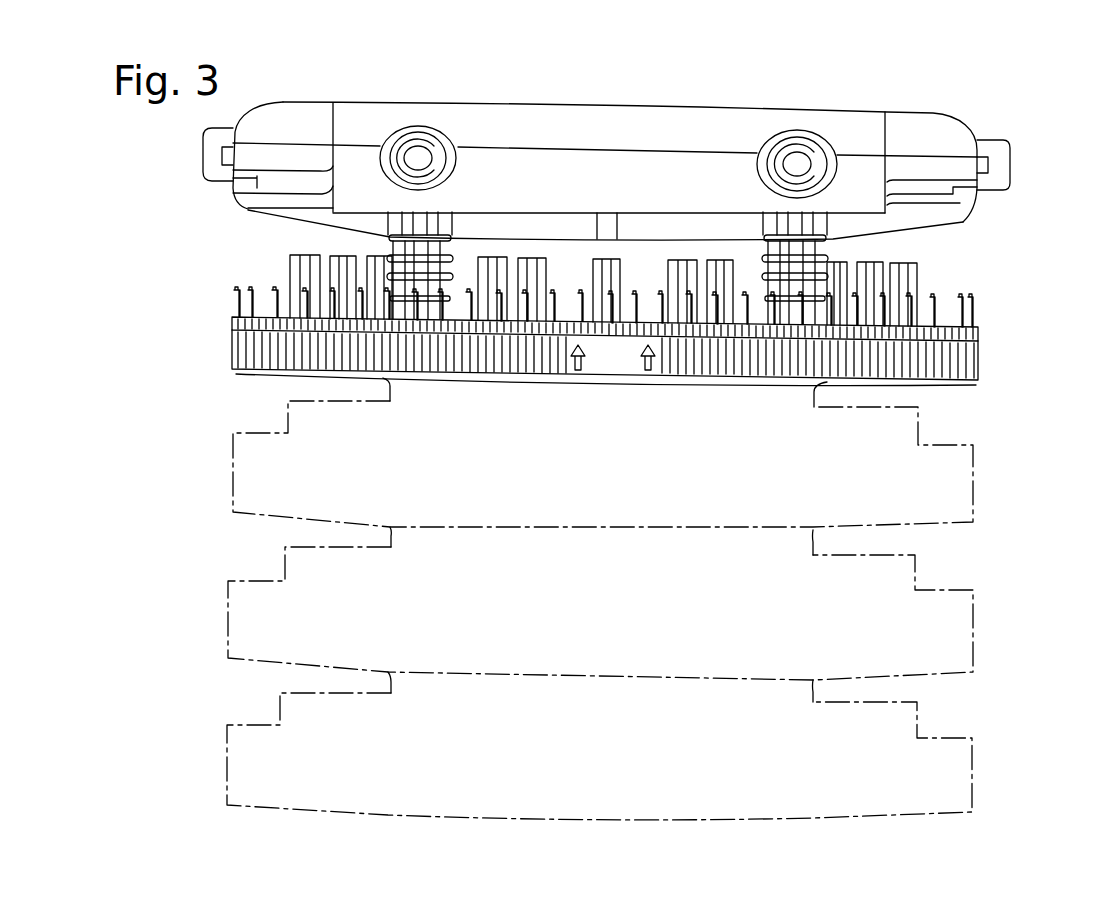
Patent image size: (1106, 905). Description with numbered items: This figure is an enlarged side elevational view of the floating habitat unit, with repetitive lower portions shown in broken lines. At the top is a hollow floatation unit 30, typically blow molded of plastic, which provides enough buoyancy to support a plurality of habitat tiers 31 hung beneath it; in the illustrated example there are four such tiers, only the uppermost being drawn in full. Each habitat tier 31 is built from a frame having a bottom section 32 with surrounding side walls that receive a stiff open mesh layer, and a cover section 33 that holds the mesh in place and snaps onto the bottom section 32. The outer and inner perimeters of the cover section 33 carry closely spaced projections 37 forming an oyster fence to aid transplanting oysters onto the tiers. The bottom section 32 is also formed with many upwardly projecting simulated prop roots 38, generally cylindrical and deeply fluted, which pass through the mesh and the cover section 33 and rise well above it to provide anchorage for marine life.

The floatation unit 30 is at (712, 132).
The habitat tier 31 is at (1048, 270).
The bottom section 32 is at (975, 360).
The cover section 33 is at (978, 333).
The projections 37 is at (937, 307).
The simulated prop roots 38 is at (918, 278).